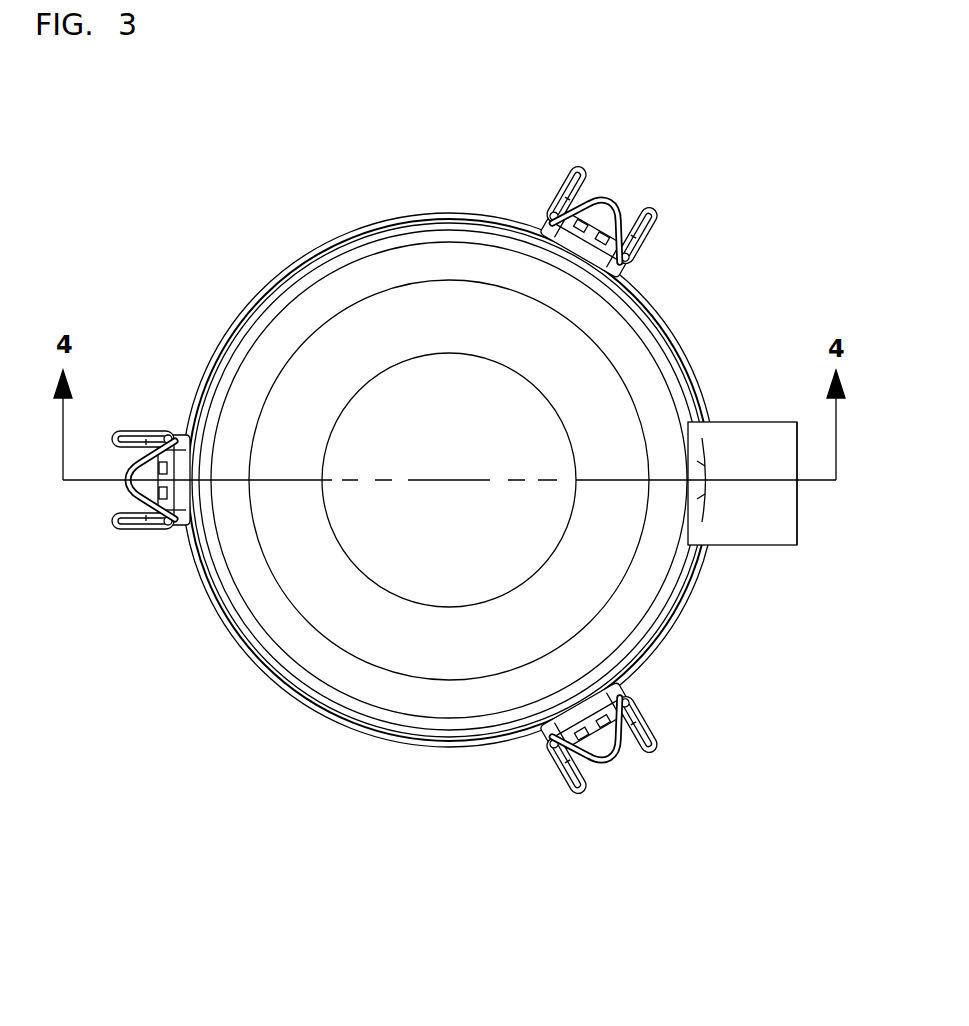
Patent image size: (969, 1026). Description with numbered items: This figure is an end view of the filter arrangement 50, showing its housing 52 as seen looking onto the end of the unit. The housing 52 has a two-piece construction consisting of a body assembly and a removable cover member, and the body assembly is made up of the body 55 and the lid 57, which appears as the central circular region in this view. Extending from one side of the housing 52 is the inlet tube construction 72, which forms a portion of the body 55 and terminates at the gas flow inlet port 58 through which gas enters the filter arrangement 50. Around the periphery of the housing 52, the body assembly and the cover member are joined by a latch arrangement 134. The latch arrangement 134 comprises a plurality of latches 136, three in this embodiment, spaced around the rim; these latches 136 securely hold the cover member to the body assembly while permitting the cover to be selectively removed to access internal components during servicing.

The filter arrangement 50 is at (480, 460).
The housing 52 is at (365, 728).
The body 55 is at (222, 331).
The lid 57 is at (458, 422).
The gas flow inlet port 58 is at (795, 520).
The inlet tube construction 72 is at (745, 421).
The latch arrangement 134 is at (418, 476).
The latches 136 is at (651, 222).